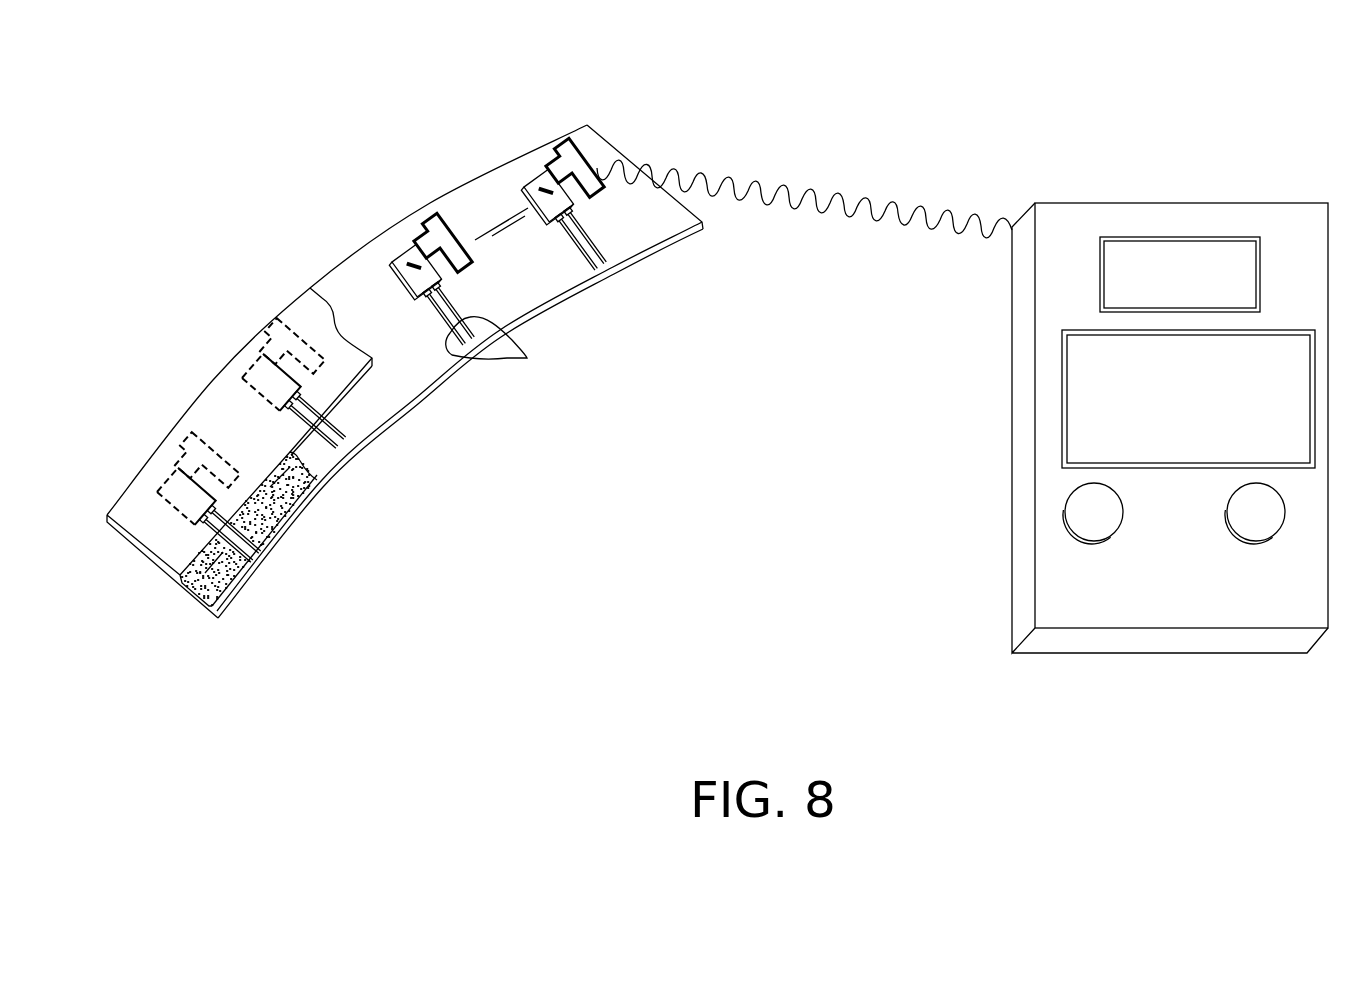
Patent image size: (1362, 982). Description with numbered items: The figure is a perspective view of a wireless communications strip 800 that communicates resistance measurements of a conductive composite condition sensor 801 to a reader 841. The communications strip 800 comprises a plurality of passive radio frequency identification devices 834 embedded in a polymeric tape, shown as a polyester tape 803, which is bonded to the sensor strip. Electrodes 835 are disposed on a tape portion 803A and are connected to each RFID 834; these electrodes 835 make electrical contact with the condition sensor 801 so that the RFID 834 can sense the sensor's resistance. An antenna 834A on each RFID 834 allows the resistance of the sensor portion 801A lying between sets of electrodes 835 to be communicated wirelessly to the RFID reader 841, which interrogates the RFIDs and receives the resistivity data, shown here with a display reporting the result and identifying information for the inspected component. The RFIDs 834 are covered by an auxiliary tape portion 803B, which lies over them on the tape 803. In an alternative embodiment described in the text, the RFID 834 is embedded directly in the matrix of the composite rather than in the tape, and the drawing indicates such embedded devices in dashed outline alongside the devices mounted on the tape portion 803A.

The wireless communications strip 800 is at (215, 292).
The conductive composite condition sensor 801 is at (233, 587).
The sensor portion 801A is at (258, 558).
The polyester tape 803 is at (213, 380).
The tape portion 803A is at (400, 403).
The auxiliary tape portion 803B is at (337, 303).
The passive radio frequency identification device 834 is at (403, 252).
The antenna 834A is at (437, 225).
The electrodes 835 is at (527, 358).
The reader 841 is at (1173, 143).